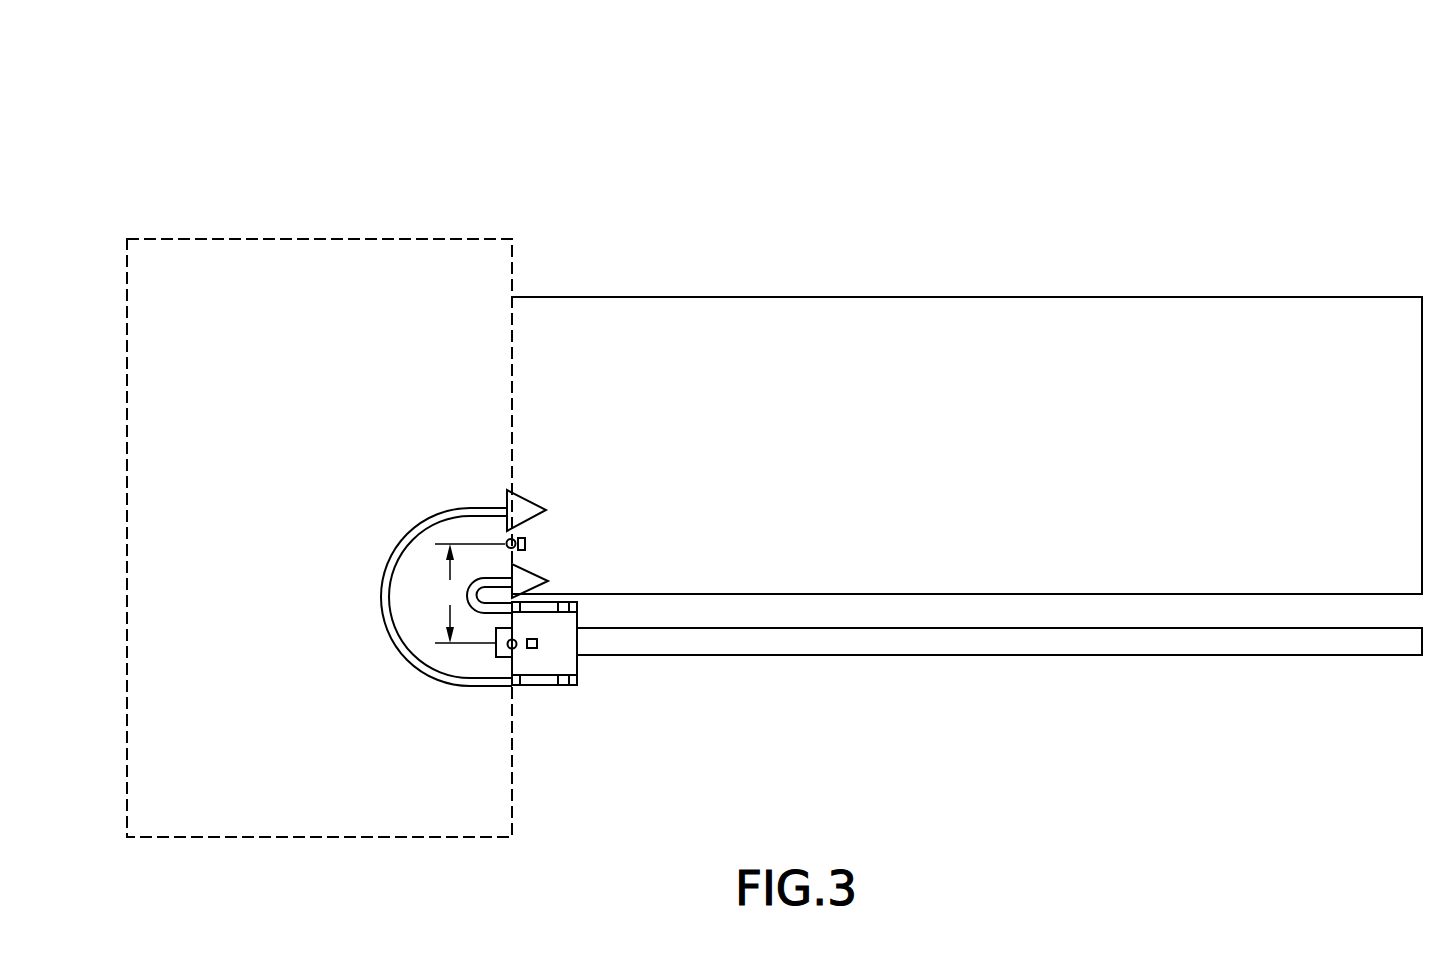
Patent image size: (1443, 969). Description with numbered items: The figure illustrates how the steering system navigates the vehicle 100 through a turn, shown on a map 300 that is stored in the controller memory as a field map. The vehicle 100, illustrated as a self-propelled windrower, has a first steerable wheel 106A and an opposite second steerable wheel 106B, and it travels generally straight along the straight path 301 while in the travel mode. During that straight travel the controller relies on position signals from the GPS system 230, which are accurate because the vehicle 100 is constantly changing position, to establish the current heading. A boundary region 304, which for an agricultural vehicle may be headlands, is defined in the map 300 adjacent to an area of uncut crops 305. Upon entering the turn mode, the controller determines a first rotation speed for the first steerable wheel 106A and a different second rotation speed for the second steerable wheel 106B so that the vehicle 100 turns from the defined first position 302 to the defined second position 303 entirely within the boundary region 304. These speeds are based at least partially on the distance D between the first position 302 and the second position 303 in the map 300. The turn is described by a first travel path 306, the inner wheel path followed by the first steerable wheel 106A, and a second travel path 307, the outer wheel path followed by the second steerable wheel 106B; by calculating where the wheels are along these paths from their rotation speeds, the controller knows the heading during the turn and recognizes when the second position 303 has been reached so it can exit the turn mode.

The map 300 is at (904, 112).
The straight path 301 is at (775, 648).
The first position 302 is at (507, 652).
The defined second position 303 is at (506, 541).
The boundary region 304 is at (309, 280).
The area of uncut crops 305 is at (970, 290).
The first travel path 306 is at (483, 577).
The second travel path 307 is at (412, 655).
The vehicle 100 is at (566, 694).
The first steerable wheel 106A is at (532, 605).
The second steerable wheel 106B is at (520, 687).
The GPS system 230 is at (537, 643).
The distance D is at (470, 593).